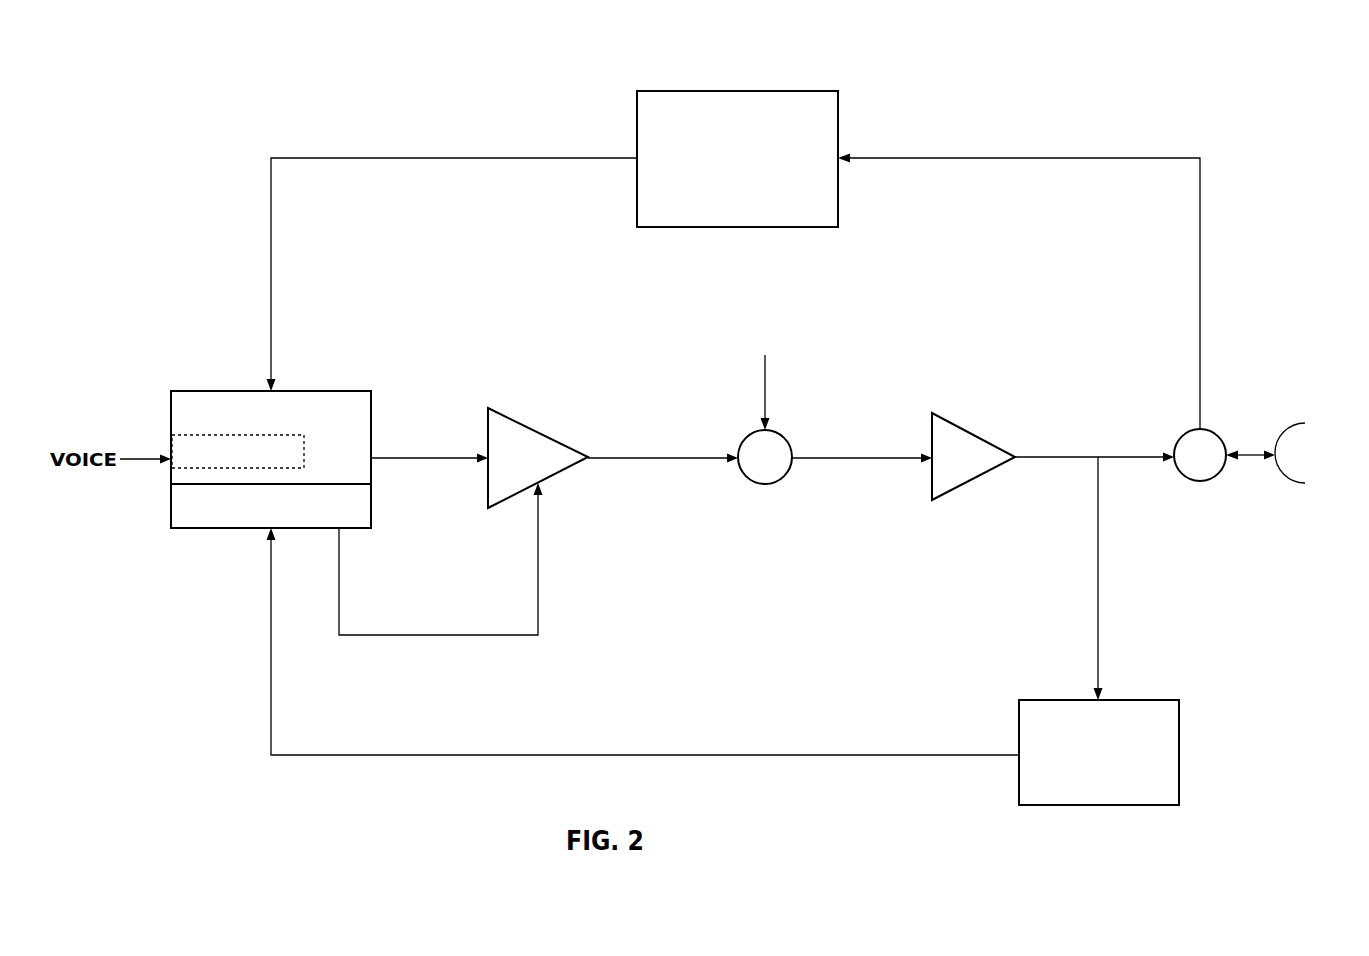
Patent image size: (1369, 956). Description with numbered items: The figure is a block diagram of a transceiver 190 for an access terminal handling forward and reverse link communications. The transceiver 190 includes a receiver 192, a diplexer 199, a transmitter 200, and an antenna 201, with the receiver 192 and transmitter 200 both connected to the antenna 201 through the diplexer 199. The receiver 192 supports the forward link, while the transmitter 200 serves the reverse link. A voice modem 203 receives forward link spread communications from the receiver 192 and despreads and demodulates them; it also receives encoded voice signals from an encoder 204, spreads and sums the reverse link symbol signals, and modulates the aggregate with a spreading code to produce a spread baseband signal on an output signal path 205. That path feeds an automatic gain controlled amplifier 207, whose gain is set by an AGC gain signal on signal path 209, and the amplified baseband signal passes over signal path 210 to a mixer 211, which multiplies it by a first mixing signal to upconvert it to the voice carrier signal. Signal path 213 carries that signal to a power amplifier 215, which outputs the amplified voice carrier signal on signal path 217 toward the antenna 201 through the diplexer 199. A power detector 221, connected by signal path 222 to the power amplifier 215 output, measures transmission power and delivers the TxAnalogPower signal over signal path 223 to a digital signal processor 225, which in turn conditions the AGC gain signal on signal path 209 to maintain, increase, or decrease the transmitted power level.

The transceiver 190 is at (364, 136).
The receiver 192 is at (748, 228).
The diplexer 199 is at (1217, 430).
The transmitter 200 is at (840, 325).
The antenna 201 is at (1297, 423).
The modem 203 is at (188, 391).
The encoder 204 is at (305, 448).
The output signal path 205 is at (399, 458).
The automatic gain controlled (TxAGC) amplifier 207 is at (513, 412).
The signal path 209 is at (538, 545).
The signal path 210 is at (625, 458).
The mixer 211 is at (788, 436).
The signal path 213 is at (831, 458).
The power amplifier 215 is at (945, 418).
The signal path 217 is at (1047, 457).
The power detector 221 is at (1125, 806).
The signal path 222 is at (1098, 585).
The signal path 223 is at (714, 757).
The digital signal processor 225 is at (371, 503).